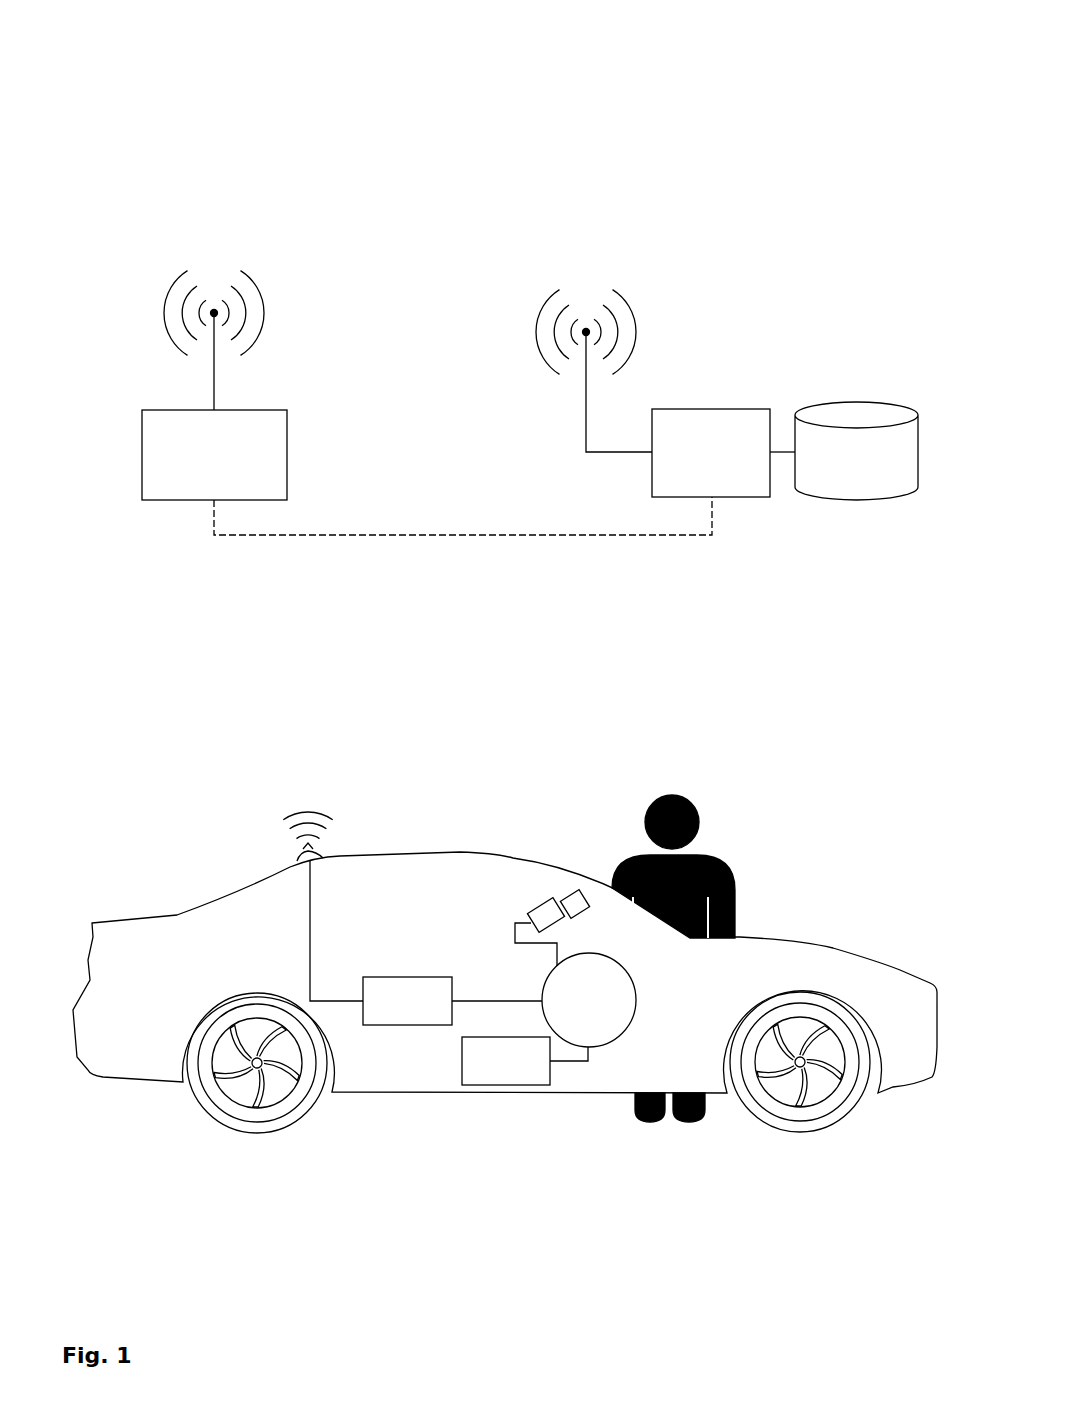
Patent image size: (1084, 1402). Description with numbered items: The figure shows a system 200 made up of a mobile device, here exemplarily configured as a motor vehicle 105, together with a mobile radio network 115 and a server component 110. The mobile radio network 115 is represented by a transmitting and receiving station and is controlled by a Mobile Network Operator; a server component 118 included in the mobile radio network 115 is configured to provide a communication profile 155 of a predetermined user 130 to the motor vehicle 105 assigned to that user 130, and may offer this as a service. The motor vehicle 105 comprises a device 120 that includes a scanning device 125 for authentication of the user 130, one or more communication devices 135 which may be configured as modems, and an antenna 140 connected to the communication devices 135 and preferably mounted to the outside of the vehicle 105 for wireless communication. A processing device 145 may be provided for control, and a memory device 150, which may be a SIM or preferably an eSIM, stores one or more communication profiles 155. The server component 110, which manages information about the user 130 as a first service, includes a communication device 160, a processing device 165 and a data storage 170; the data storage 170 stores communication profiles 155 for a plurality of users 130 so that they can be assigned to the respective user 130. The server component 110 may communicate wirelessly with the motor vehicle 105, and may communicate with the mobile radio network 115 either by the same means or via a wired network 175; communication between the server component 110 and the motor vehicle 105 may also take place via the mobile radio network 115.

The system 200 is at (180, 95).
The mobile radio network 115 is at (213, 232).
The server component 118 is at (214, 455).
The wired network 175 is at (715, 537).
The server component 110 is at (742, 232).
The communication device 160 is at (643, 328).
The processing device 165 is at (723, 453).
The data storage 170 is at (856, 451).
The device 120 is at (446, 793).
The motor vehicle 105 is at (845, 948).
The antenna 140 is at (302, 793).
The scanning device 125 is at (548, 898).
The communication device 135 is at (452, 1001).
The processing device 145 is at (589, 1000).
The memory device 150 is at (525, 1061).
The communication profile 155 is at (541, 1080).
The user 130 is at (667, 791).